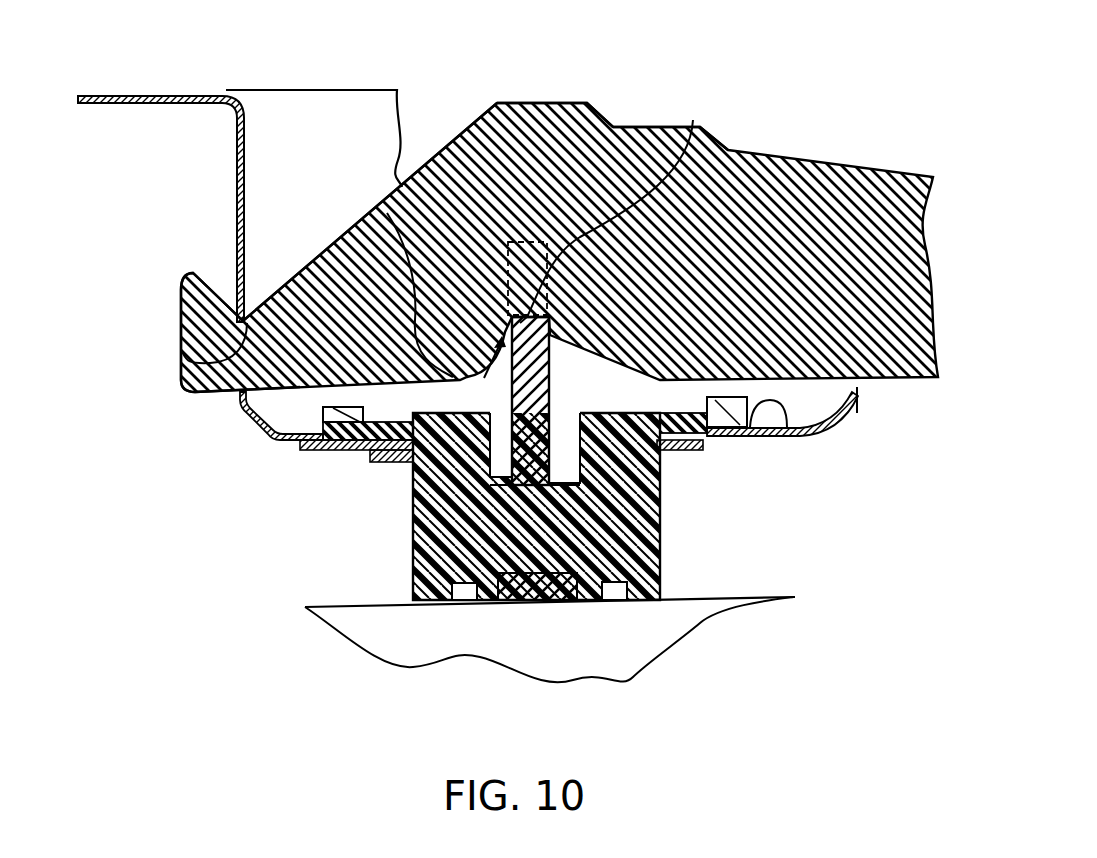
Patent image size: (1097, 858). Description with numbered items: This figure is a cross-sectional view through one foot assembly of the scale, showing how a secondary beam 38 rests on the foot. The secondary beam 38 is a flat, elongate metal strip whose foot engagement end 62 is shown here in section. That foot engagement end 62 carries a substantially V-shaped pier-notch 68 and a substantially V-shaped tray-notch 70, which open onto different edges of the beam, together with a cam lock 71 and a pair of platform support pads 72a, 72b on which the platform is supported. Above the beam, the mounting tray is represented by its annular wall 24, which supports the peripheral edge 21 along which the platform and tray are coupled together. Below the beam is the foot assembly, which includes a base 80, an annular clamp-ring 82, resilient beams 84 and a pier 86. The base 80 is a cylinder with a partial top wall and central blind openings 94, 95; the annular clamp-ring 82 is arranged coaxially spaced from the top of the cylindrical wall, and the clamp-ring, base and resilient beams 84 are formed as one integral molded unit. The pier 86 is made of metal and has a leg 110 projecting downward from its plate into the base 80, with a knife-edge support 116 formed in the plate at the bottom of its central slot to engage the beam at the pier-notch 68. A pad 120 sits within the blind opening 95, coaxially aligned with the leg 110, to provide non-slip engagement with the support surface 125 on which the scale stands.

The peripheral edge 21 is at (160, 94).
The annular wall 24 is at (310, 133).
The foot engagement end 62 is at (434, 137).
The platform support pad 72a is at (533, 103).
The platform support pad 72b is at (633, 127).
The knife-edge support 116 is at (600, 235).
The secondary beam 38 is at (807, 173).
The pier-notch 68 is at (380, 208).
The cam lock 71 is at (181, 293).
The tray-notch 70 is at (181, 348).
The annular clamp-ring 82 is at (797, 437).
The resilient beams 84 is at (700, 441).
The pier 86 is at (570, 394).
The central blind opening 94 is at (500, 457).
The leg 110 is at (527, 478).
The base 80 is at (672, 523).
The support surface 125 is at (700, 620).
The pad 120 is at (510, 604).
The central blind opening 95 is at (570, 602).